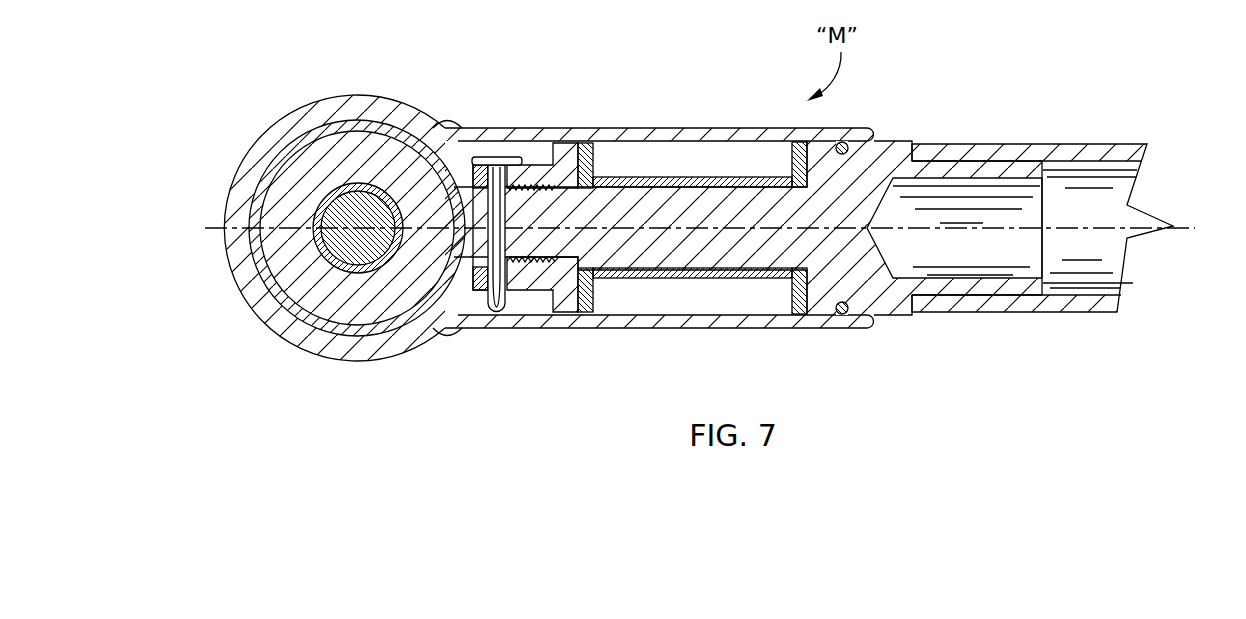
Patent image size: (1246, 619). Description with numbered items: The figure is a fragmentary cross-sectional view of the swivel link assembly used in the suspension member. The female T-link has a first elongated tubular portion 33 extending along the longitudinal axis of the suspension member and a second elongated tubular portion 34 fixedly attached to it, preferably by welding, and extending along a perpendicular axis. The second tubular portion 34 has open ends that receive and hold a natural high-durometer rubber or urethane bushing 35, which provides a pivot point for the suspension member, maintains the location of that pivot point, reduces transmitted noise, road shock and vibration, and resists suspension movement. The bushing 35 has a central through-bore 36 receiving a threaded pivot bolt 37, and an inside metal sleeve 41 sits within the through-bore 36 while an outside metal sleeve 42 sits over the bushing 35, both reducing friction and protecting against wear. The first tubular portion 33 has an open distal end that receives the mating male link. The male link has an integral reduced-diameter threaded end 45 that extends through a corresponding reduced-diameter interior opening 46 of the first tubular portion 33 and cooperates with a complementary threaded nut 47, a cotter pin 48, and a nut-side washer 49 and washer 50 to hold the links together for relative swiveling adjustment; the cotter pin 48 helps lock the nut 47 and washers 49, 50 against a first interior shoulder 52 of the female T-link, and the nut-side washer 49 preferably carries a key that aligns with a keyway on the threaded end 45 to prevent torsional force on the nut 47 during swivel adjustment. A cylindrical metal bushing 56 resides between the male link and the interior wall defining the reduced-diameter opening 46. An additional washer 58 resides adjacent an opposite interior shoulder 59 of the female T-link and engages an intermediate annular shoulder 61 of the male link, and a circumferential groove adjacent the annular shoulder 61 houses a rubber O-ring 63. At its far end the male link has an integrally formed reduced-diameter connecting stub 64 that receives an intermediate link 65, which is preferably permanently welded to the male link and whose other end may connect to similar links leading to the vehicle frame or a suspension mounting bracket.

The first elongated tubular portion 33 is at (856, 129).
The second elongated tubular portion 34 is at (295, 110).
The bushing 35 is at (283, 180).
The central through-bore 36 is at (356, 268).
The threaded pivot bolt 37 is at (389, 252).
The inside metal sleeve 41 is at (272, 300).
The outside metal sleeve 42 is at (296, 322).
The threaded end 45 is at (658, 250).
The reduced-diameter interior opening 46 is at (680, 188).
The threaded nut 47 is at (532, 300).
The cotter pin 48 is at (466, 313).
The nut-side washer 49 is at (560, 143).
The washer 50 is at (584, 143).
The first interior shoulder 52 is at (590, 318).
The cylindrical metal bushing 56 is at (727, 186).
The additional washer 58 is at (790, 160).
The opposite interior shoulder 59 is at (792, 298).
The intermediate annular shoulder 61 is at (845, 290).
The rubber O-ring 63 is at (840, 313).
The reduced-diameter connecting stub 64 is at (1005, 192).
The intermediate link 65 is at (1085, 146).